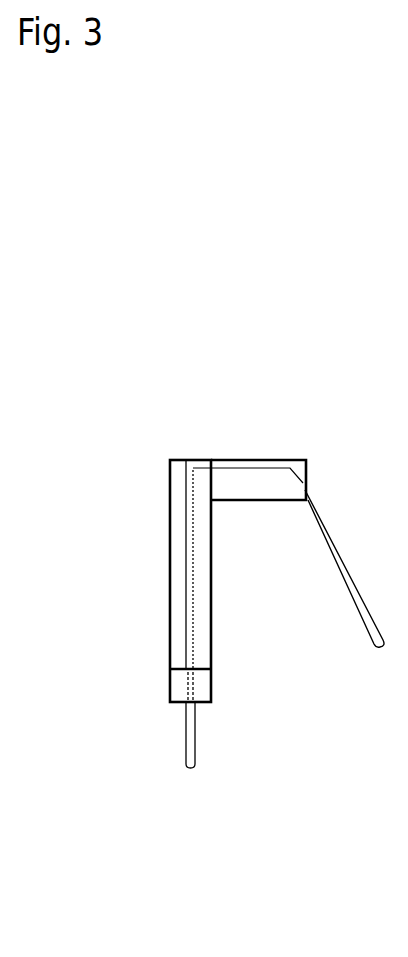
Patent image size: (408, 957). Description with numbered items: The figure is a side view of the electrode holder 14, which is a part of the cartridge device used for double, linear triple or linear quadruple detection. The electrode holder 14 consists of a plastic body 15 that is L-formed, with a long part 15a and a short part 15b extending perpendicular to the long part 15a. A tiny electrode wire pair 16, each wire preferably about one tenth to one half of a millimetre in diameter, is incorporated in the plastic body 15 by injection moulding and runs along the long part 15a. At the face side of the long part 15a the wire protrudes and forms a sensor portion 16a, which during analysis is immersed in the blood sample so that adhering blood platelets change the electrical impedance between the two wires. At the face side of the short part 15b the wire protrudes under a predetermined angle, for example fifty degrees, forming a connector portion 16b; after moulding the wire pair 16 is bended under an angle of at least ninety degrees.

The electrode holder 14 is at (206, 574).
The plastic body 15 is at (170, 535).
The long part 15a is at (170, 648).
The short part 15b is at (258, 480).
The electrode wire pair 16 is at (192, 573).
The sensor portion 16a is at (203, 763).
The connector portion 16b is at (380, 652).